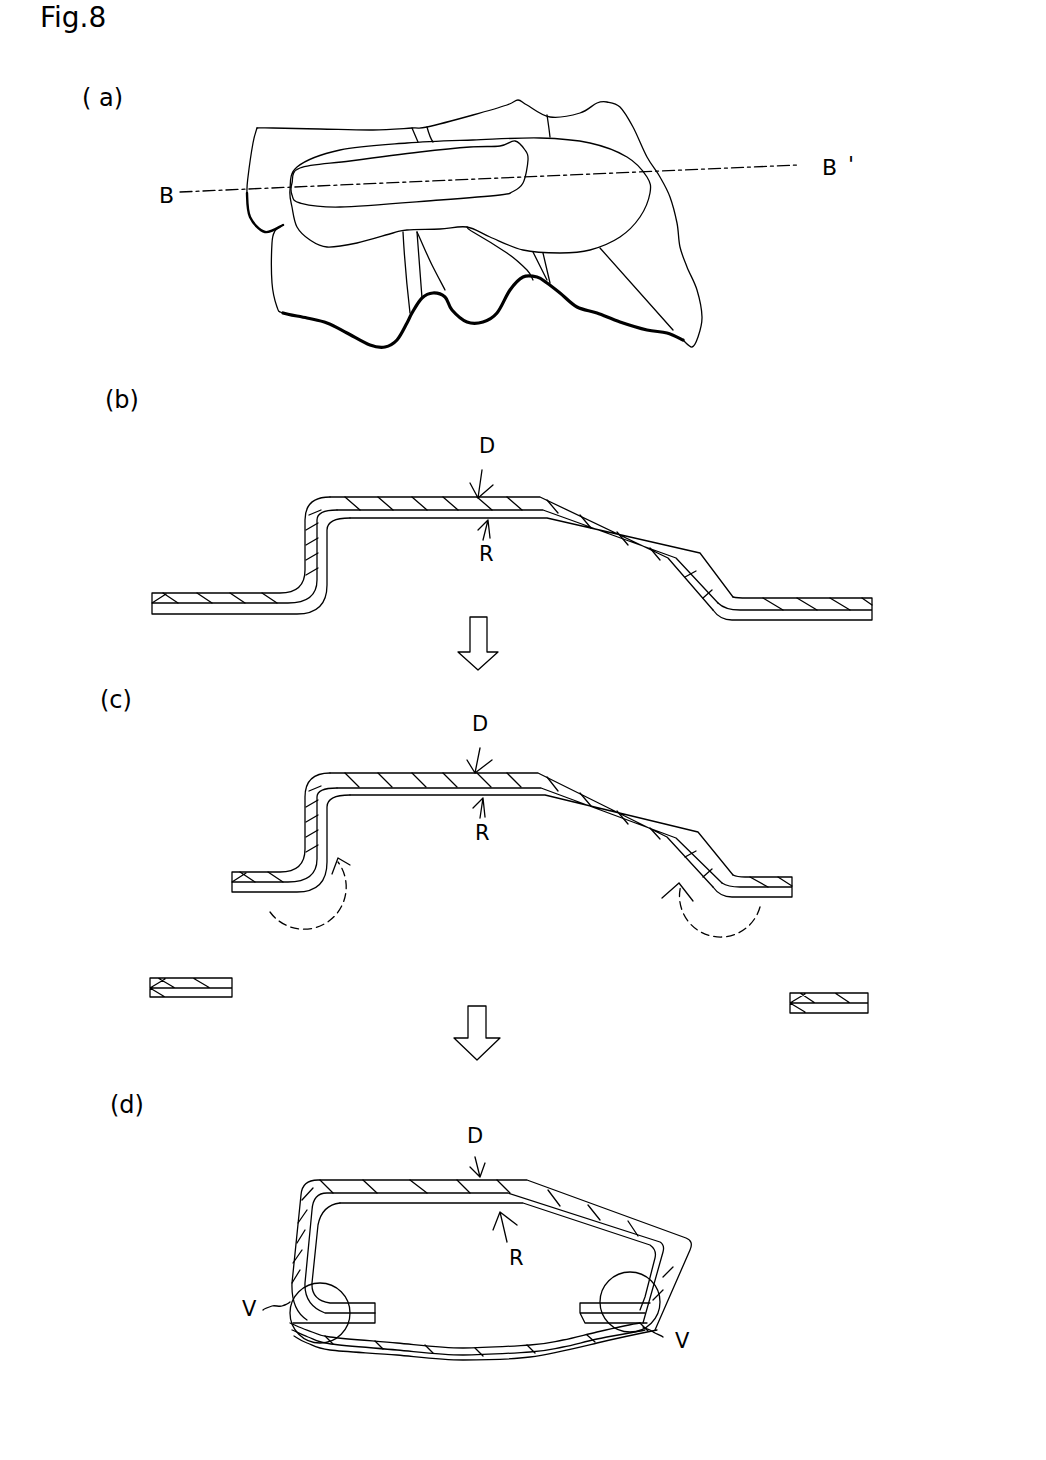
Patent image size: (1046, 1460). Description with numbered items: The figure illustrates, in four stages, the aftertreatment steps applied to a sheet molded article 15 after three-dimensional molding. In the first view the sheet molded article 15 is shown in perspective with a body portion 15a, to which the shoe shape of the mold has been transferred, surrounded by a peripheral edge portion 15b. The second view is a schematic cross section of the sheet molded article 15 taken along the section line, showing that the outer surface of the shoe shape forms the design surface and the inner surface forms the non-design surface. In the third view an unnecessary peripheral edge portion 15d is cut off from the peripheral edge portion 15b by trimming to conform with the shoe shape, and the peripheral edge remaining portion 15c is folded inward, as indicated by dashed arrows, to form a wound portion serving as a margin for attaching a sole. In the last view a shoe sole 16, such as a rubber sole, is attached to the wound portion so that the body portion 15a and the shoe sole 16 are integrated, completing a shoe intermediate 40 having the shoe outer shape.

The sheet molded article 15 is at (617, 103).
The body portion 15a is at (617, 160).
The peripheral edge portion 15b is at (682, 280).
The peripheral edge remaining portion 15c is at (262, 845).
The unnecessary peripheral edge portion 15d is at (217, 977).
The shoe sole 16 is at (563, 1340).
The shoe intermediate 40 is at (720, 1177).